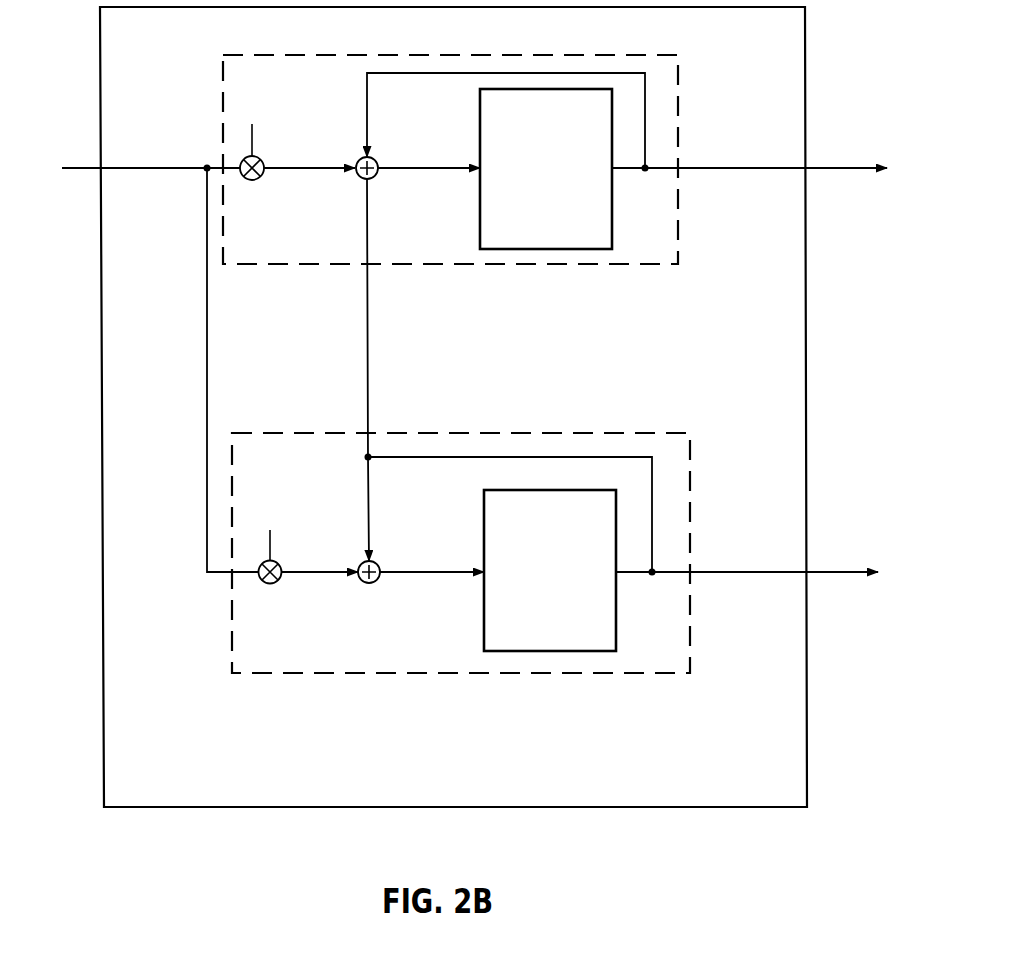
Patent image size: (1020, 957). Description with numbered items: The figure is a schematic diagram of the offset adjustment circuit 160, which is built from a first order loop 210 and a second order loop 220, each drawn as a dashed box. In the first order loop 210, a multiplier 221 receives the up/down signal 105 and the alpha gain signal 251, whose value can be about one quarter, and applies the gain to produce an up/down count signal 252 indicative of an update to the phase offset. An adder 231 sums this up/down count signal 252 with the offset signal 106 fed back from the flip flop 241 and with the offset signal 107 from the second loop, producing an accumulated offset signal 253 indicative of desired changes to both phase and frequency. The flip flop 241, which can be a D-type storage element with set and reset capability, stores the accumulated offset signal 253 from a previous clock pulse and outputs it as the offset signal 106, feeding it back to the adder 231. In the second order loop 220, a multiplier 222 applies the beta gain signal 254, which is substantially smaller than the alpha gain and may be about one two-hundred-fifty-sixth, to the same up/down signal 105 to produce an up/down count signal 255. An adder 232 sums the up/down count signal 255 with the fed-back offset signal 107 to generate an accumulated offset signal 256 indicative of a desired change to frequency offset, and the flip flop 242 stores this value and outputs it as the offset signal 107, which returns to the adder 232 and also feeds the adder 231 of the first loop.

The up/down signal 105 is at (160, 358).
The offset signal 106 is at (749, 156).
The offset signal 107 is at (747, 560).
The offset adjustment circuit 160 is at (468, 763).
The first order loop 210 is at (678, 264).
The second order loop 220 is at (690, 673).
The multiplier 221 is at (259, 178).
The multiplier 222 is at (277, 582).
The adder 231 is at (373, 178).
The adder 232 is at (375, 582).
The flip flop 241 is at (546, 169).
The flip flop 242 is at (550, 570).
The alpha gain signal 251 is at (263, 116).
The up/down count signal 252 is at (309, 156).
The accumulated offset signal 253 is at (429, 156).
The beta gain signal 254 is at (281, 520).
The up/down count signal 255 is at (320, 559).
The accumulated offset signal 256 is at (432, 559).